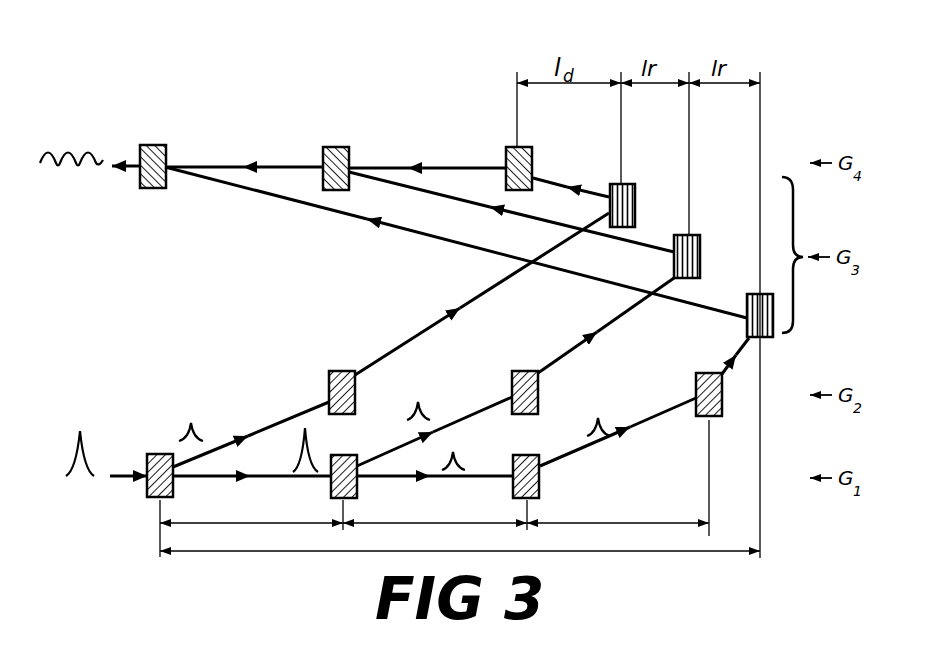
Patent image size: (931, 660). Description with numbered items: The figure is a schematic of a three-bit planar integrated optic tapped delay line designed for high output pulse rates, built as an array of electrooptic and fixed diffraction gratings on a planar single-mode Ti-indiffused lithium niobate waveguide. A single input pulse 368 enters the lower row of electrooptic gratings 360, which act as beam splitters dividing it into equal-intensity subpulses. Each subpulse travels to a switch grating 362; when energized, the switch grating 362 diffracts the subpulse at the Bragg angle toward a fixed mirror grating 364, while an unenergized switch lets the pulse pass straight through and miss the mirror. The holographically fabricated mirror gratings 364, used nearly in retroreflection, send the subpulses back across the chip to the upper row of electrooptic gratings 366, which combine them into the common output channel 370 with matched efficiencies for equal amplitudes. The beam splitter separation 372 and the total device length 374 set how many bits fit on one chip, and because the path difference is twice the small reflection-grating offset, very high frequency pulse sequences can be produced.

The electrooptic beam splitter gratings 360 is at (152, 500).
The switch gratings 362 is at (329, 386).
The fixed mirror gratings 364 is at (636, 197).
The electrooptic combining gratings 366 is at (152, 145).
The input pulse 368 is at (118, 474).
The output channel 370 is at (136, 167).
The electrooptic grating separation 372 is at (434, 512).
The total device length 374 is at (460, 540).